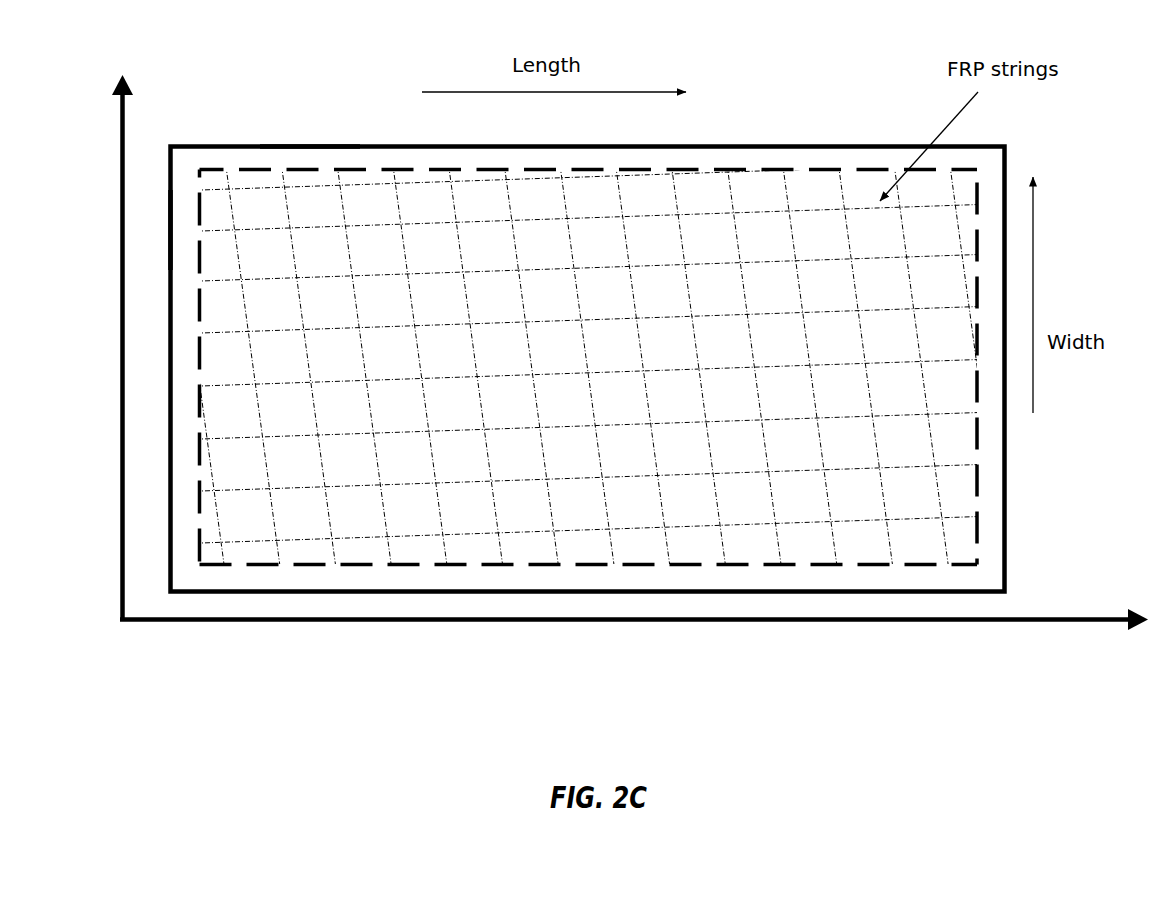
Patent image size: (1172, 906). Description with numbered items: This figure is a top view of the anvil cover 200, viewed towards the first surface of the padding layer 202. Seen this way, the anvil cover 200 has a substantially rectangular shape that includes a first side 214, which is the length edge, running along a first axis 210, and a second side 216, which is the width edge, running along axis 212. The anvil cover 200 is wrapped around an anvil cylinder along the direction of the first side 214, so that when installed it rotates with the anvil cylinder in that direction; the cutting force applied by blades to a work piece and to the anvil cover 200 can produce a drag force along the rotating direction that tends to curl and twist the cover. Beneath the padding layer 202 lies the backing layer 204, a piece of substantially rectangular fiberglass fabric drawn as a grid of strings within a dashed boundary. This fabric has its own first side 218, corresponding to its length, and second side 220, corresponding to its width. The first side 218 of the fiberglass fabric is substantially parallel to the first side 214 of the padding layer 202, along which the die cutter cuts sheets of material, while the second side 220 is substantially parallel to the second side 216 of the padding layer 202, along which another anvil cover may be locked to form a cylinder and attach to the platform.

The anvil cover 200 is at (561, 302).
The padding layer 202 is at (824, 155).
The backing layer 204 is at (952, 438).
The first axis 210 is at (634, 600).
The axis 212 is at (94, 348).
The first side 214 is at (309, 143).
The second side 216 is at (166, 229).
The first side of the fiberglass fabric 218 is at (418, 165).
The second side of the fiberglass fabric 220 is at (197, 314).